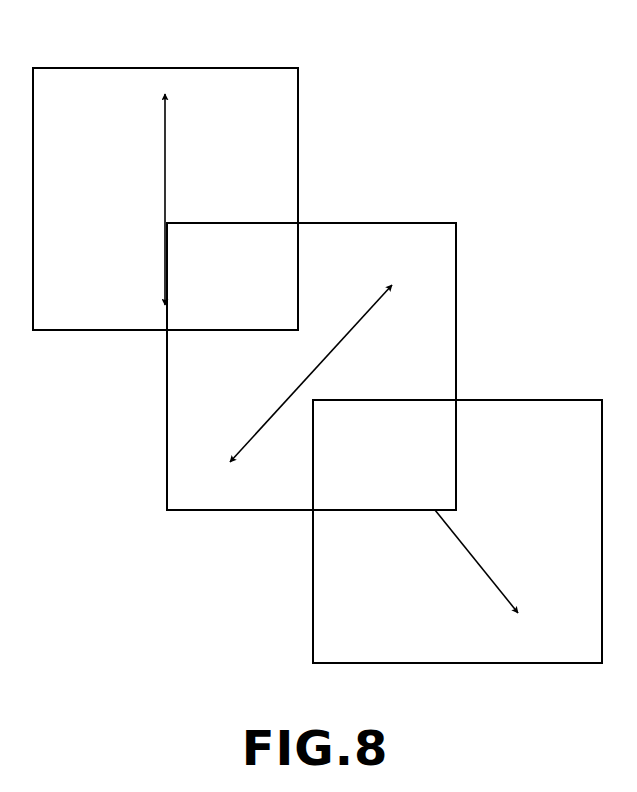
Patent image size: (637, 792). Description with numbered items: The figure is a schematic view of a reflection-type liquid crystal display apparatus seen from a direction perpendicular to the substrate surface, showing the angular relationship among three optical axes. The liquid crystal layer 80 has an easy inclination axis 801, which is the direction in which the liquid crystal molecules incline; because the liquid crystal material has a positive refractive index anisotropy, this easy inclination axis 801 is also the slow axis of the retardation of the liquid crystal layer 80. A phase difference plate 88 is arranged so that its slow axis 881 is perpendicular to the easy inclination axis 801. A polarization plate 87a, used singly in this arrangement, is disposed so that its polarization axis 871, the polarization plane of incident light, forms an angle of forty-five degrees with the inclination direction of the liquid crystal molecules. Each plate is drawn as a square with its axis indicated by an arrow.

The polarization plate 87a is at (165, 183).
The polarization axis 871 is at (201, 199).
The phase difference plate 88 is at (311, 347).
The slow axis 881 is at (311, 373).
The liquid crystal layer 80 is at (457, 513).
The easy inclination axis 801 is at (485, 561).